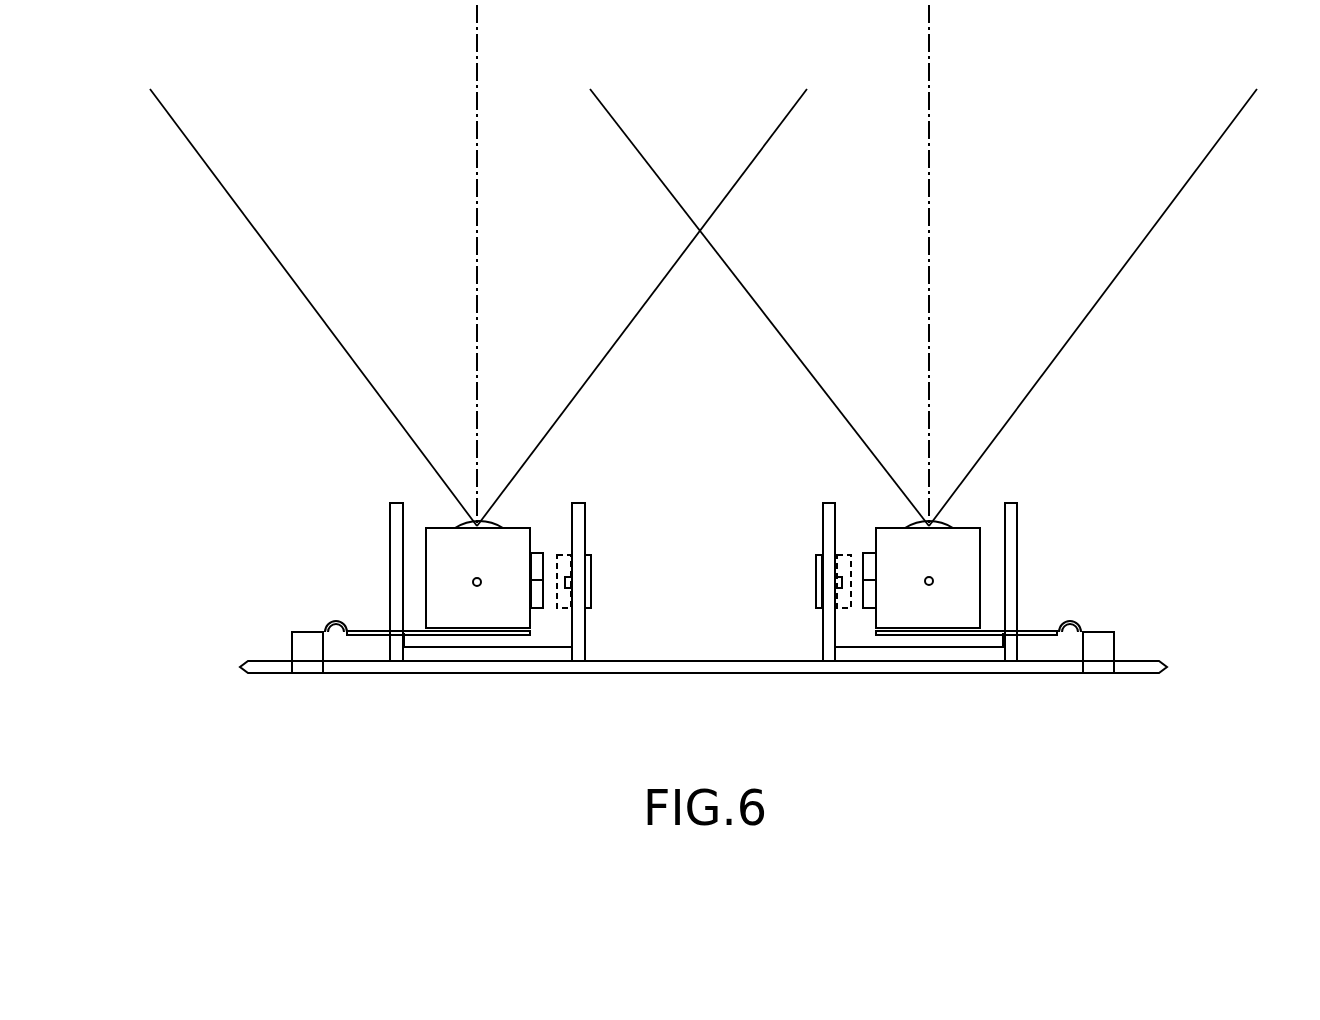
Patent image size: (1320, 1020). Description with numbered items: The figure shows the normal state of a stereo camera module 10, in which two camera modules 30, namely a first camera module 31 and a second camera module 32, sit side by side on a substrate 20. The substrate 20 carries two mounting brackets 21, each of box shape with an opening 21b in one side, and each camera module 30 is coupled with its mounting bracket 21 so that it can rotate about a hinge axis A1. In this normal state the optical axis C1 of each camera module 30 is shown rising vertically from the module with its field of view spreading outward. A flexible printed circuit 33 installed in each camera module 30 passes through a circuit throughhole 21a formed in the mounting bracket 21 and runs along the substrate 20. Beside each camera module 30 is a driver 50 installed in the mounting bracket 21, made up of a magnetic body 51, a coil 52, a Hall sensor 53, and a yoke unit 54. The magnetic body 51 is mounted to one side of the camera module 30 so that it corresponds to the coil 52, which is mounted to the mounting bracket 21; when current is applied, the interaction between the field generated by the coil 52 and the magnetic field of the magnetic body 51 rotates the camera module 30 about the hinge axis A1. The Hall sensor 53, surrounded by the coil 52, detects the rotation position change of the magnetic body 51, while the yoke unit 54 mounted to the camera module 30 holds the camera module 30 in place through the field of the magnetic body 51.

The stereo camera module 10 is at (703, 391).
The substrate 20 is at (268, 668).
The mounting bracket 21 is at (703, 556).
The circuit throughhole 21a is at (395, 655).
The opening 21b is at (417, 518).
The camera module 30 is at (703, 501).
The first camera module 31 is at (517, 540).
The second camera module 32 is at (890, 537).
The flexible printed circuit 33 is at (338, 621).
The driver 50 is at (694, 665).
The magnetic body 51 is at (536, 610).
The coil 52 is at (564, 610).
The Hall sensor 53 is at (572, 583).
The yoke unit 54 is at (591, 572).
The hinge axis A1 is at (477, 587).
The optical axis C1 is at (478, 63).